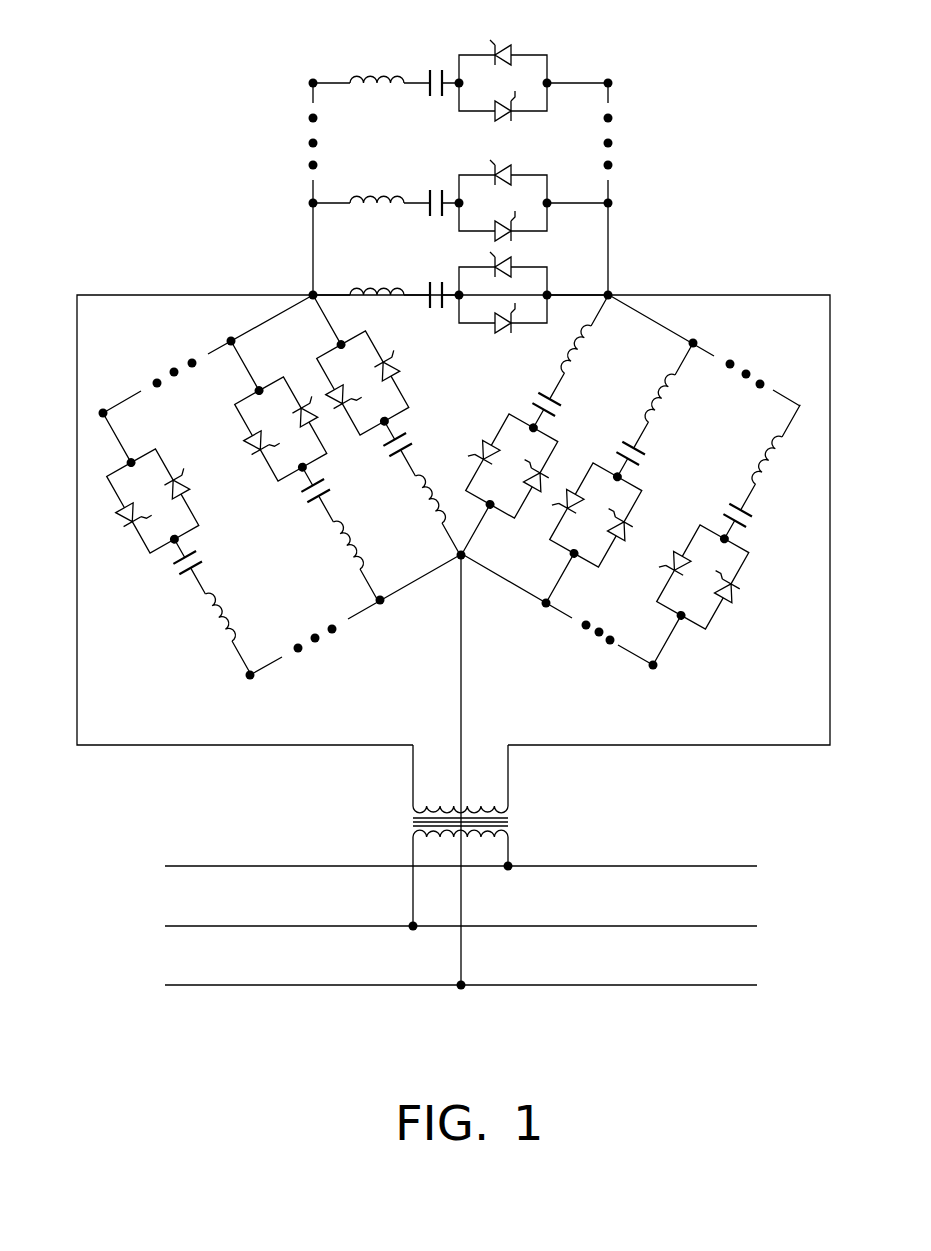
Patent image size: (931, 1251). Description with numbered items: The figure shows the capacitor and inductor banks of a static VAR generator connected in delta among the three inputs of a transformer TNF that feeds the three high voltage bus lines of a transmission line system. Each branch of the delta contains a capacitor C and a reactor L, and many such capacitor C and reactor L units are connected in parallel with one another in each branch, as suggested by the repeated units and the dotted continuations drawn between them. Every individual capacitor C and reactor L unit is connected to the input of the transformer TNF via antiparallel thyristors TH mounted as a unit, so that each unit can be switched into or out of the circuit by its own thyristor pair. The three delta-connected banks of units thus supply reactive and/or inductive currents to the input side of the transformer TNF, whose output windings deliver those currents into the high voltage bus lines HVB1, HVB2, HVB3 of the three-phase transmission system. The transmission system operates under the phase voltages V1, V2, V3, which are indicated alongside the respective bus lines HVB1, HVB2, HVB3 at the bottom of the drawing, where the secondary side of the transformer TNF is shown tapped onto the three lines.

The reactor L is at (384, 29).
The capacitor C is at (451, 29).
The antiparallel thyristors TH is at (519, 29).
The transformer TNF is at (377, 812).
The phase voltage V1 is at (277, 866).
The phase voltage V2 is at (280, 926).
The phase voltage V3 is at (287, 985).
The high voltage bus line HVB1 is at (713, 866).
The high voltage bus line HVB2 is at (715, 926).
The high voltage bus line HVB3 is at (720, 985).